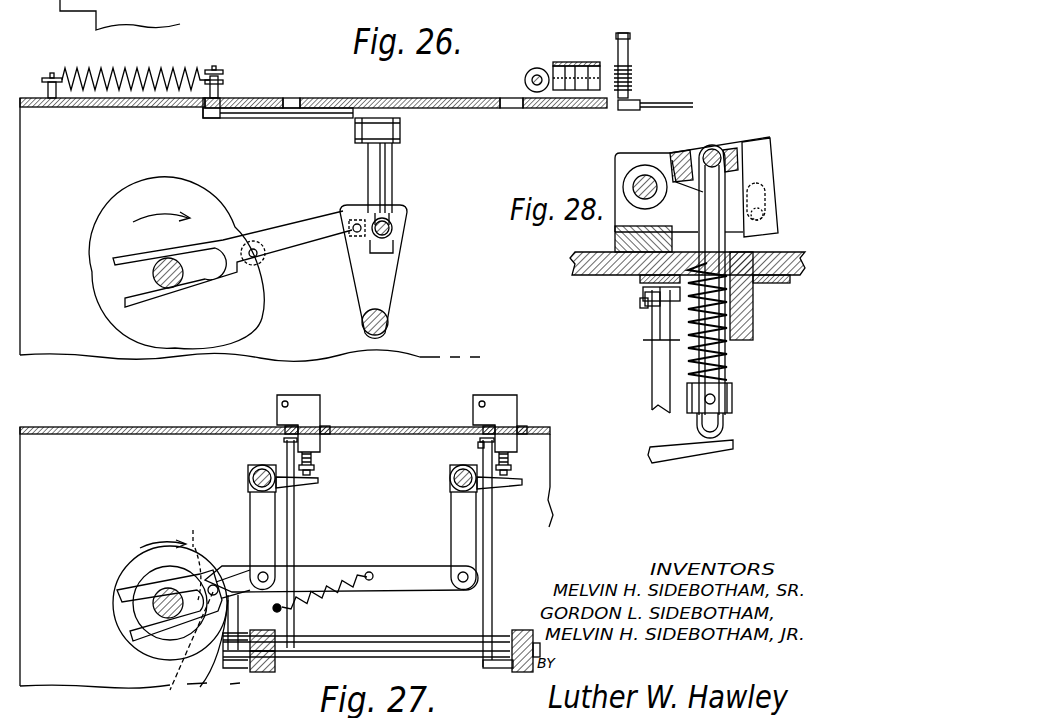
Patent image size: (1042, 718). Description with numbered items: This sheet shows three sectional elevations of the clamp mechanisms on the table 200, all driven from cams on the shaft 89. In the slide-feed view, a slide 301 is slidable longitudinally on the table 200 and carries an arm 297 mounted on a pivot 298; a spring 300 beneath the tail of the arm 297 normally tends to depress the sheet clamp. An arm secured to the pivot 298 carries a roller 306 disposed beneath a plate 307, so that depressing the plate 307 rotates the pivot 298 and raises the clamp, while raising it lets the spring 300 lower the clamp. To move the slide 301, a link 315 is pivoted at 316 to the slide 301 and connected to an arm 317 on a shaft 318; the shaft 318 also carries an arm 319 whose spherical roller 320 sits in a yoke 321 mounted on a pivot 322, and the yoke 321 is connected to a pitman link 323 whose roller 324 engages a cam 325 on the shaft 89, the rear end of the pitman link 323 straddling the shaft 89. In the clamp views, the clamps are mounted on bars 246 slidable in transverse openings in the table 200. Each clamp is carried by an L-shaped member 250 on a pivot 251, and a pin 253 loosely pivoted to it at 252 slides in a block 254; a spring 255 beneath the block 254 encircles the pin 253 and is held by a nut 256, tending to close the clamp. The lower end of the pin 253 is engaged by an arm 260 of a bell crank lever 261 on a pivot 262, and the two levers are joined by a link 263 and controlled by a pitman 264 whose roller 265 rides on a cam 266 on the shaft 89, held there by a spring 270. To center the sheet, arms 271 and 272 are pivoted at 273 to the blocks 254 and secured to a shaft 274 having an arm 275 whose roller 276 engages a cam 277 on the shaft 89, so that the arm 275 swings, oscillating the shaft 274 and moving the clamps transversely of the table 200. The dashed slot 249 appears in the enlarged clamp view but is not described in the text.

In FIG. 26, the shaft 89 is at (170, 283).
In FIG. 27, the shaft 89 is at (133, 587).
In FIG. 27, the table 200 is at (138, 435).
In FIG. 27, the bars 246 is at (308, 433).
In FIG. 28, the slot 249 is at (760, 200).
In FIG. 28, the L-shaped member 250 is at (762, 143).
In FIG. 28, the pivot 251 is at (644, 180).
In FIG. 27, the pivot 251 is at (277, 402).
In FIG. 28, the pivot 252 is at (714, 148).
In FIG. 28, the pin 253 is at (672, 160).
In FIG. 27, the pin 253 is at (308, 458).
In FIG. 28, the block 254 is at (757, 291).
In FIG. 28, the spring 255 is at (728, 363).
In FIG. 28, the nut 256 is at (733, 394).
In FIG. 27, the nut 256 is at (298, 452).
In FIG. 28, the arm 260 is at (725, 450).
In FIG. 27, the arm 260 is at (320, 479).
In FIG. 27, the bell crank lever 261 is at (252, 503).
In FIG. 27, the pivot 262 is at (249, 474).
In FIG. 27, the link 263 is at (415, 562).
In FIG. 27, the pitman 264 is at (238, 554).
In FIG. 27, the roller 265 is at (170, 555).
In FIG. 27, the cam 266 is at (153, 573).
In FIG. 27, the spring 270 is at (323, 598).
In FIG. 28, the arm 271 is at (660, 370).
In FIG. 27, the arm 271 is at (292, 503).
In FIG. 27, the arm 272 is at (493, 579).
In FIG. 28, the pivot 273 is at (642, 313).
In FIG. 27, the pivot 273 is at (483, 446).
In FIG. 27, the shaft 274 is at (470, 629).
In FIG. 27, the arm 275 is at (208, 659).
In FIG. 27, the roller 276 is at (166, 655).
In FIG. 27, the cam 277 is at (153, 653).
In FIG. 26, the arm 297 is at (628, 37).
In FIG. 26, the pivot 298 is at (588, 66).
In FIG. 26, the spring 300 is at (634, 77).
In FIG. 26, the slide 301 is at (310, 98).
In FIG. 26, the roller 306 is at (526, 80).
In FIG. 26, the plate 307 is at (566, 45).
In FIG. 26, the link 315 is at (248, 116).
In FIG. 26, the pivot 316 is at (218, 100).
In FIG. 26, the arm 317 is at (355, 126).
In FIG. 26, the shaft 318 is at (368, 166).
In FIG. 26, the arm 319 is at (388, 214).
In FIG. 26, the spherical roller 320 is at (393, 229).
In FIG. 26, the yoke 321 is at (380, 280).
In FIG. 26, the pivot 322 is at (389, 323).
In FIG. 26, the pitman link 323 is at (318, 244).
In FIG. 26, the roller 324 is at (262, 242).
In FIG. 26, the cam 325 is at (247, 318).